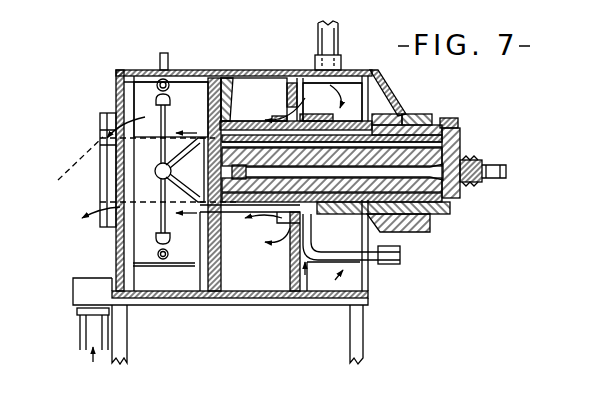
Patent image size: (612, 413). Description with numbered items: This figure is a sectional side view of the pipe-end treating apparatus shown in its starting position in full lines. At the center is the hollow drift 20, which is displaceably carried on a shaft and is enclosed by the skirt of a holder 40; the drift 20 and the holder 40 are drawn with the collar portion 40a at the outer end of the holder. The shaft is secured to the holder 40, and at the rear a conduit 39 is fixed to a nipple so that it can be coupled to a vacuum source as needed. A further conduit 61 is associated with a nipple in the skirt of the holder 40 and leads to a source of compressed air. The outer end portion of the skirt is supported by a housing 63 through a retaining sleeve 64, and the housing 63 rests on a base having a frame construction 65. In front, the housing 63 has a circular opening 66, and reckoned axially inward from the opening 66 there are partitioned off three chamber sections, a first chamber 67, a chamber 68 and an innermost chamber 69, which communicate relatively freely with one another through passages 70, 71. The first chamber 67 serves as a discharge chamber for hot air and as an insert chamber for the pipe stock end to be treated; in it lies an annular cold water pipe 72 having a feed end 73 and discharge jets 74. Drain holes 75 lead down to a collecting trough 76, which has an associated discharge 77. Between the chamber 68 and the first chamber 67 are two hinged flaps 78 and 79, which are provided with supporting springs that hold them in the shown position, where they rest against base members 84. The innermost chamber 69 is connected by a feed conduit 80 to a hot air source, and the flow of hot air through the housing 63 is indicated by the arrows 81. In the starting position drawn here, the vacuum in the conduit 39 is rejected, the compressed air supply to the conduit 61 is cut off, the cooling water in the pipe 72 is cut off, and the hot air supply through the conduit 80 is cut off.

The drift 20 is at (378, 113).
The conduit 39 is at (480, 182).
The holder 40 is at (461, 138).
The end cap collar 40a is at (446, 122).
The conduit 61 is at (408, 229).
The housing 63 is at (286, 103).
The retaining sleeve 64 is at (404, 117).
The frame construction 65 is at (364, 336).
The circular opening 66 is at (105, 136).
The first chamber 67 is at (145, 106).
The chamber 68 is at (258, 95).
The innermost chamber 69 is at (345, 90).
The passage 70 is at (214, 80).
The passage 71 is at (300, 80).
The annular cold water pipe 72 is at (158, 82).
The feed end 73 is at (162, 53).
The discharge jets 74 is at (158, 100).
The drain holes 75 is at (168, 294).
The collecting trough 76 is at (295, 298).
The discharge 77 is at (94, 332).
The hinged flap 78 is at (207, 120).
The hinged flap 79 is at (209, 294).
The feed conduit 80 is at (340, 34).
The arrows 81 is at (221, 131).
The base members 84 is at (200, 252).